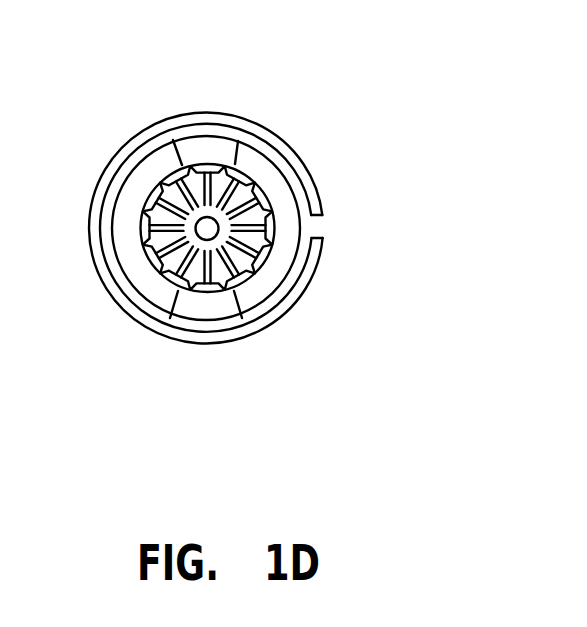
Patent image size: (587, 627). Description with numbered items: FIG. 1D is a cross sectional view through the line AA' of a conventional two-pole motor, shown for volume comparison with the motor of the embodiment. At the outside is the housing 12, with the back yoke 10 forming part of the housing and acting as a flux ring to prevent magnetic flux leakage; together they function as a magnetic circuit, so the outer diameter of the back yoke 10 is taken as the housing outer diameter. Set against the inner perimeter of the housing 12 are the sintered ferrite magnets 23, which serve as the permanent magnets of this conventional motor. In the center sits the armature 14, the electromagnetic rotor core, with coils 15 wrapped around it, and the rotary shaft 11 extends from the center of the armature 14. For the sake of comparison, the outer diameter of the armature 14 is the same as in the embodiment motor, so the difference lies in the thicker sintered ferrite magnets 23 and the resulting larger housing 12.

The back yoke 10 is at (204, 115).
The rotary shaft 11 is at (201, 233).
The housing 12 is at (318, 229).
The armature 14 is at (270, 265).
The coils 15 is at (221, 282).
The sintered ferrite magnets 23 is at (281, 180).